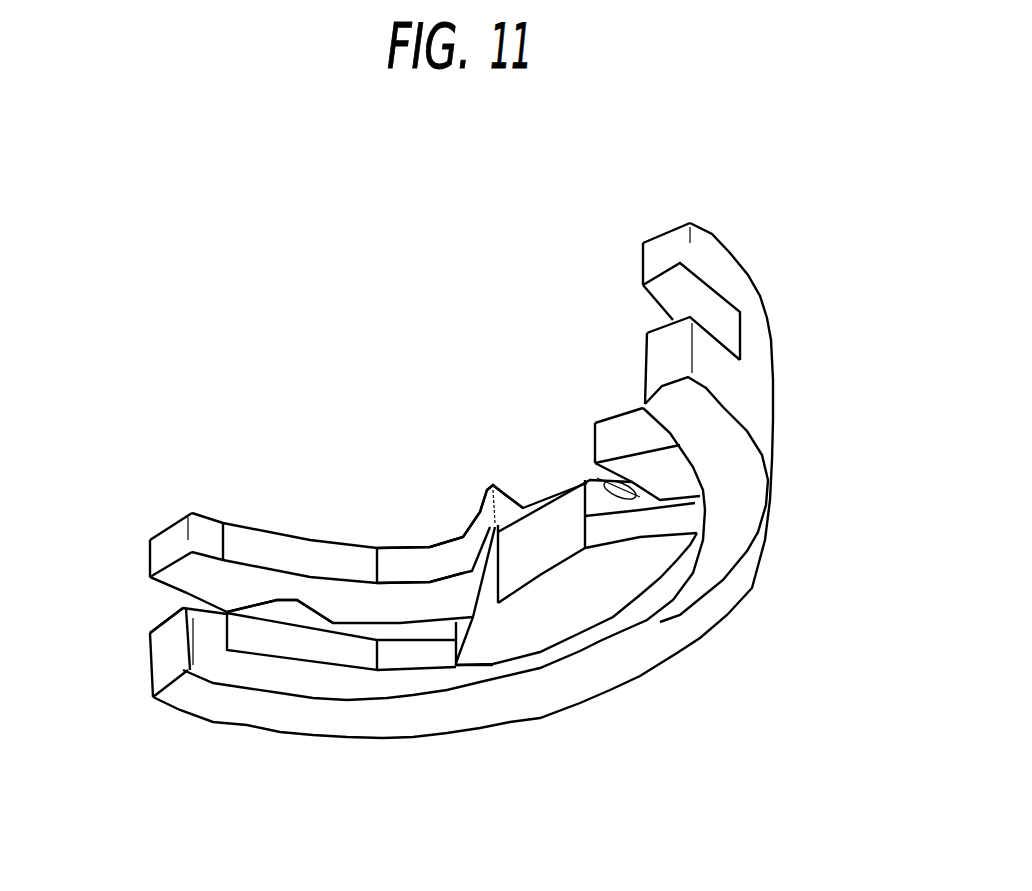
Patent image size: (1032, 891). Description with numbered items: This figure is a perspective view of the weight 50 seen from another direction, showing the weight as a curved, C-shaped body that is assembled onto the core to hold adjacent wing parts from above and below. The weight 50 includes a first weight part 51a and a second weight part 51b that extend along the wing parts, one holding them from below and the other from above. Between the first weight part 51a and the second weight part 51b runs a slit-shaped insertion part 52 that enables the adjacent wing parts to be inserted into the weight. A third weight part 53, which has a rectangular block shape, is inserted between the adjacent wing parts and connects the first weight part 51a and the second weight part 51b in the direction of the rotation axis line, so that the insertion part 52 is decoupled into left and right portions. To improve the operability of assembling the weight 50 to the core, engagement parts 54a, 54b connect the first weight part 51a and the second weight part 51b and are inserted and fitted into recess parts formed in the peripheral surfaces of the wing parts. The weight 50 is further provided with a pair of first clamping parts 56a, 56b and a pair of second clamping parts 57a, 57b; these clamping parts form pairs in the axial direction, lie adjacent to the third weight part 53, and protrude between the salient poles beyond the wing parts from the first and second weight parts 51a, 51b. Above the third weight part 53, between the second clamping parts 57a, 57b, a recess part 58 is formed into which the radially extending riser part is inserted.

The weight 50 is at (746, 225).
The first weight part 51a is at (400, 655).
The second weight part 51b is at (417, 560).
The insertion part 52 is at (153, 609).
The third weight part 53 is at (560, 533).
The engagement part 54a is at (743, 340).
The engagement part 54b is at (280, 608).
The first clamping part 56a is at (483, 607).
The first clamping part 56b is at (640, 527).
The second clamping part 57a is at (510, 492).
The second clamping part 57b is at (611, 441).
The recess part 58 is at (572, 462).